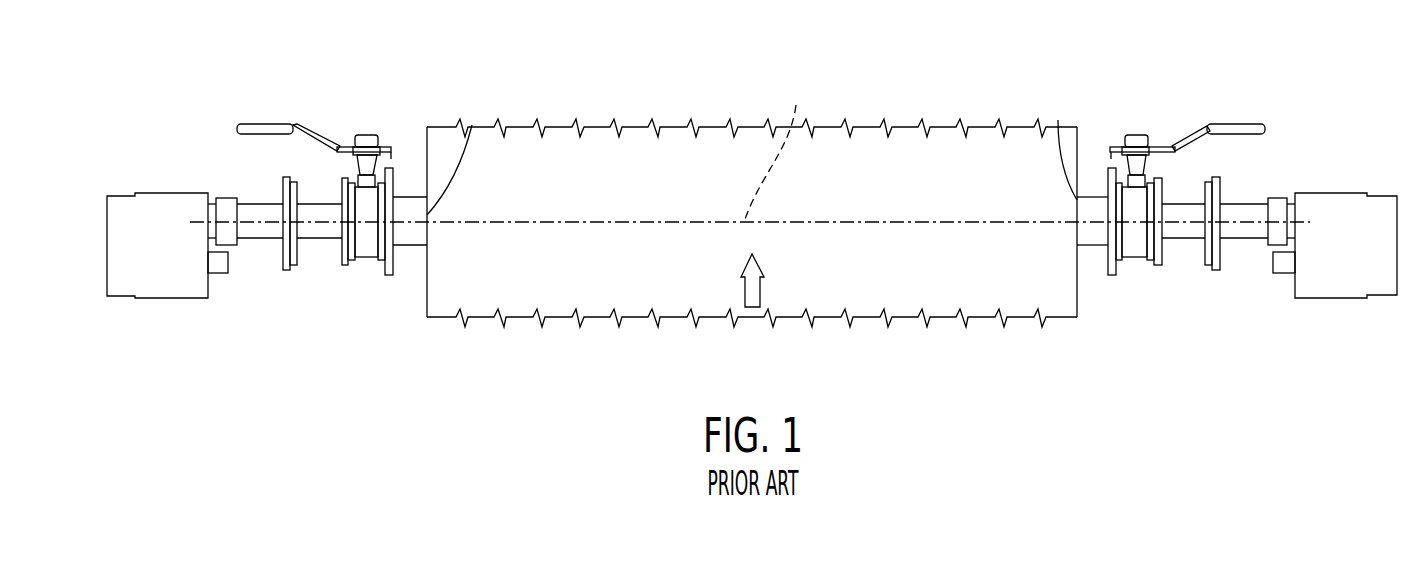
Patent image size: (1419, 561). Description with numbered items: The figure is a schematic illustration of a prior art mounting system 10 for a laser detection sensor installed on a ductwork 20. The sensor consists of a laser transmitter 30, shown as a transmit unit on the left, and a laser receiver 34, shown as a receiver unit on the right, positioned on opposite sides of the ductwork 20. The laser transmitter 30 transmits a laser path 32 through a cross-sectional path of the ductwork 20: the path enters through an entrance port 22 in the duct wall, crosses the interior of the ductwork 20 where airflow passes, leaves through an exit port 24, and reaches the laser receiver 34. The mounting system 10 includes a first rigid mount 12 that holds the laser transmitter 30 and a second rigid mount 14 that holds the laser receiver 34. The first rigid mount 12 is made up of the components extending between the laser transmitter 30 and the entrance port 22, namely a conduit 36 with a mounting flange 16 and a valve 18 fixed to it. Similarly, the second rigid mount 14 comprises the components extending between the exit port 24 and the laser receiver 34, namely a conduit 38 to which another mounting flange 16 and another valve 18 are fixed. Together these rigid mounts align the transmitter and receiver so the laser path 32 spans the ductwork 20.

The mounting system 10 is at (942, 70).
The first rigid mount 12 is at (215, 292).
The second rigid mount 14 is at (1098, 292).
The mounting flange 16 is at (283, 180).
The valve 18 is at (367, 132).
The ductwork 20 is at (1018, 300).
The entrance port 22 is at (472, 127).
The exit port 24 is at (1058, 120).
The laser transmitter 30 is at (150, 298).
The laser path 32 is at (774, 146).
The laser receiver 34 is at (1332, 298).
The conduit 36 is at (245, 200).
The conduit 38 is at (1260, 200).